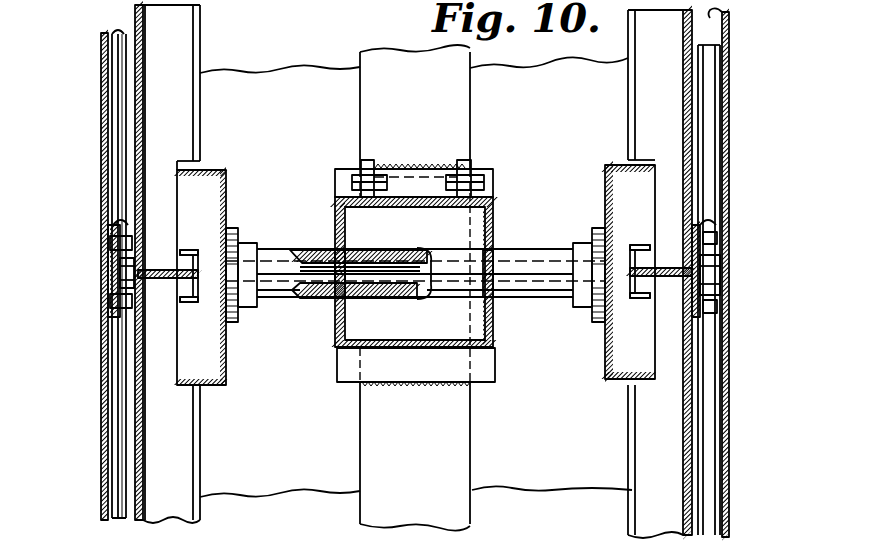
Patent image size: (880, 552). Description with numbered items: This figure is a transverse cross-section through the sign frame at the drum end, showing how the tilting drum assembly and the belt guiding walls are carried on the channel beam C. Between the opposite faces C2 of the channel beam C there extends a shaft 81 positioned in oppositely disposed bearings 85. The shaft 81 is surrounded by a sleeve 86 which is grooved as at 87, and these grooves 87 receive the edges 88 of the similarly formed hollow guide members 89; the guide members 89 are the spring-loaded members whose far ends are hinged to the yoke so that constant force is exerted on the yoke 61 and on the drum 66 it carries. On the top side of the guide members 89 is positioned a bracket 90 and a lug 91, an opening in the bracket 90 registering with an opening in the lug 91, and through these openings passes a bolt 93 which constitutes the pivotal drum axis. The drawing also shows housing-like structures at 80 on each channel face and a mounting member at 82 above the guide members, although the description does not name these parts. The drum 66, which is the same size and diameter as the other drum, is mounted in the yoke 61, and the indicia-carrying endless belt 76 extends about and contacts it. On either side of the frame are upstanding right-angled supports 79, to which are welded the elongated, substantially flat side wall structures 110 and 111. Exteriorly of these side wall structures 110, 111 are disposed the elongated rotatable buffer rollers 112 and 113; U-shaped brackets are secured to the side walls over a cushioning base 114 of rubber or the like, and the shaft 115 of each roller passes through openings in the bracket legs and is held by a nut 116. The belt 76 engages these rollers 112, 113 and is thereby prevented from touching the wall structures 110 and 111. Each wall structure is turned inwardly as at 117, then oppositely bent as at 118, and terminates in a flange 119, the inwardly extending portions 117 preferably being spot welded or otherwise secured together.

The yoke 61 is at (358, 442).
The drum 66 is at (548, 438).
The indicia carrying endless belt 76 is at (102, 358).
The upstanding right angled supports 79 is at (200, 40).
The housing box 80 is at (184, 162).
The shaft 81 is at (318, 305).
The mounting bracket 82 is at (338, 178).
The bearings 85 is at (242, 308).
The sleeve 86 is at (530, 250).
The grooves 87 is at (343, 262).
The edges 88 is at (340, 250).
The hollow guide members 89 is at (492, 198).
The bracket 90 is at (458, 168).
The lug 91 is at (366, 160).
The bolt 93 is at (355, 175).
The side wall structure 110 is at (730, 16).
The side wall structure 111 is at (134, 8).
The buffer rollers 112 is at (110, 163).
The buffer rollers 113 is at (722, 150).
The cushioning base 114 is at (112, 222).
The shaft 115 is at (108, 277).
The nut 116 is at (105, 262).
The inwardly turned portion 117 is at (165, 268).
The oppositely bent portion 118 is at (198, 264).
The flange 119 is at (196, 248).
The channel beam C is at (224, 168).
The opposite faces of the channel beam C2 is at (226, 195).